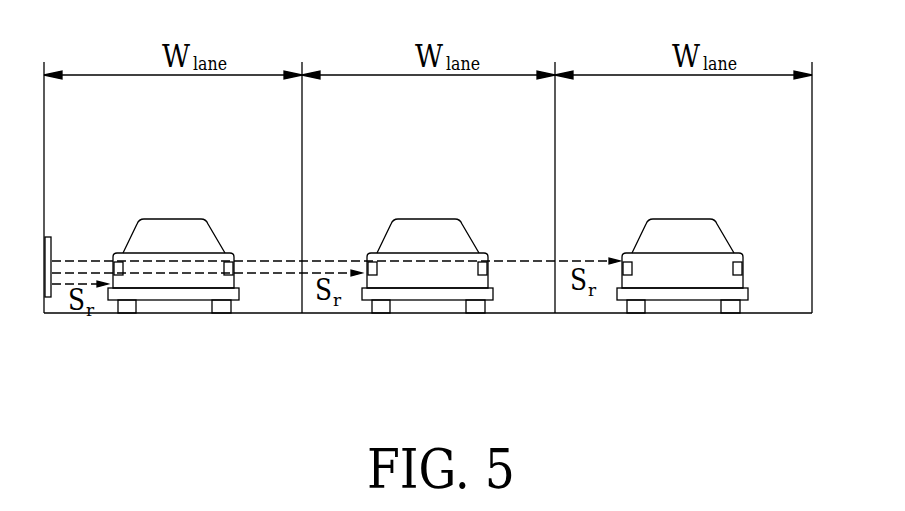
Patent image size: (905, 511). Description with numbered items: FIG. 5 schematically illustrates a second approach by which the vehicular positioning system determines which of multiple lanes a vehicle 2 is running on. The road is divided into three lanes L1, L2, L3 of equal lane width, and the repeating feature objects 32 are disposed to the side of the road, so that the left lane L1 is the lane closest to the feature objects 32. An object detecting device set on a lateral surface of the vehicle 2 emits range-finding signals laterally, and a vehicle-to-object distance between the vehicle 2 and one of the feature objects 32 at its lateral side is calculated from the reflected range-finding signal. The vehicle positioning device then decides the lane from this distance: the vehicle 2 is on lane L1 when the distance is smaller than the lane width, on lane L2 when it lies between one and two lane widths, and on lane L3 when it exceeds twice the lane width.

The feature object 32 is at (52, 247).
The vehicle 2 is at (770, 228).
The left lane L1 is at (173, 229).
The lane L2 is at (428, 229).
The lane L3 is at (683, 229).